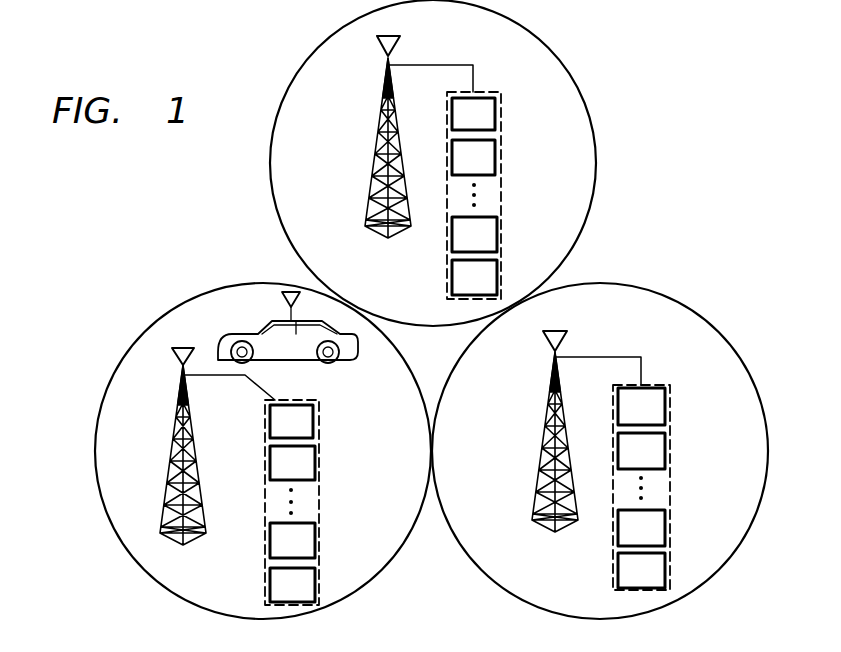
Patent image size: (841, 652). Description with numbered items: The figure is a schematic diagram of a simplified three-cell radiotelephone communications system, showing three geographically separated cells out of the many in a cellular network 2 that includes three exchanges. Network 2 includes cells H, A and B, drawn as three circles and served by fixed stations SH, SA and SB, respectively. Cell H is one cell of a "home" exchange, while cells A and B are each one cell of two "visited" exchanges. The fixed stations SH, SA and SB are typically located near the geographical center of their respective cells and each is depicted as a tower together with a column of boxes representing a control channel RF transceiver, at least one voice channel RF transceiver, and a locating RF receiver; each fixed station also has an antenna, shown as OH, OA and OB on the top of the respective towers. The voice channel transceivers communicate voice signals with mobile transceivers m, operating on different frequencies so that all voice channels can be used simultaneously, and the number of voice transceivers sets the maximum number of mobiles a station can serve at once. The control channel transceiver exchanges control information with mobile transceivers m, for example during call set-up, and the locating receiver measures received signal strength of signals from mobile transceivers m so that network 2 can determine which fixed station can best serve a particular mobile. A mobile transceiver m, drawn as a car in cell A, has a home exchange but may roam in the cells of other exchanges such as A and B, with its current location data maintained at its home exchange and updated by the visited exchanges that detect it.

The network 2 is at (646, 64).
The cell H is at (300, 52).
The cell A is at (150, 338).
The cell B is at (727, 340).
The antenna of fixed station SH OH is at (401, 50).
The fixed station SH is at (370, 172).
The antenna of fixed station SA OA is at (186, 351).
The fixed station SA is at (165, 476).
The antenna of fixed station SB OB is at (568, 348).
The fixed station SB is at (538, 464).
The mobile transceiver m is at (335, 364).